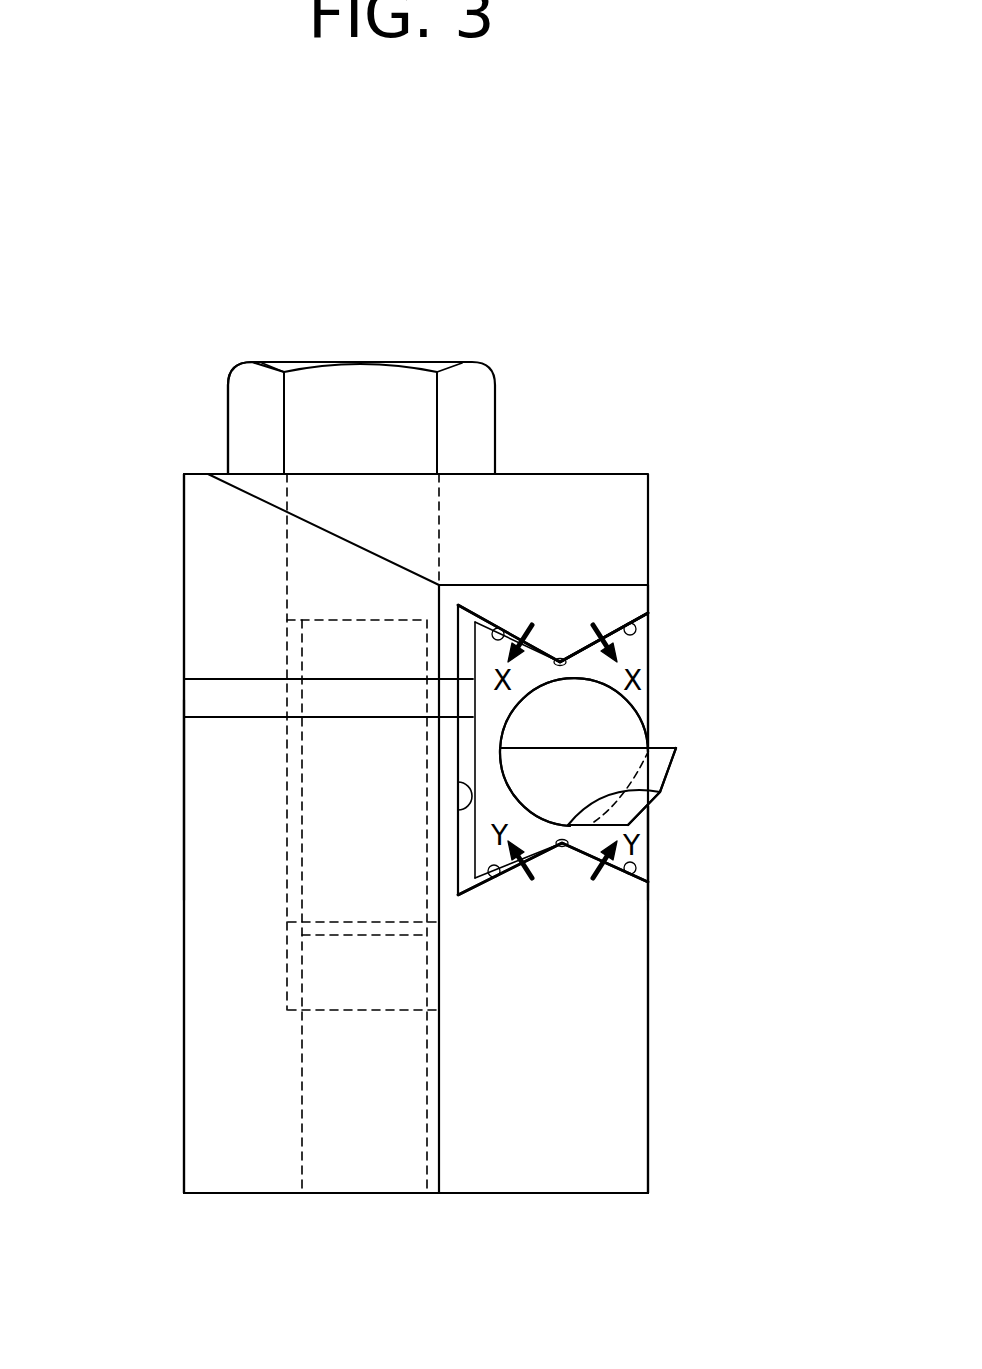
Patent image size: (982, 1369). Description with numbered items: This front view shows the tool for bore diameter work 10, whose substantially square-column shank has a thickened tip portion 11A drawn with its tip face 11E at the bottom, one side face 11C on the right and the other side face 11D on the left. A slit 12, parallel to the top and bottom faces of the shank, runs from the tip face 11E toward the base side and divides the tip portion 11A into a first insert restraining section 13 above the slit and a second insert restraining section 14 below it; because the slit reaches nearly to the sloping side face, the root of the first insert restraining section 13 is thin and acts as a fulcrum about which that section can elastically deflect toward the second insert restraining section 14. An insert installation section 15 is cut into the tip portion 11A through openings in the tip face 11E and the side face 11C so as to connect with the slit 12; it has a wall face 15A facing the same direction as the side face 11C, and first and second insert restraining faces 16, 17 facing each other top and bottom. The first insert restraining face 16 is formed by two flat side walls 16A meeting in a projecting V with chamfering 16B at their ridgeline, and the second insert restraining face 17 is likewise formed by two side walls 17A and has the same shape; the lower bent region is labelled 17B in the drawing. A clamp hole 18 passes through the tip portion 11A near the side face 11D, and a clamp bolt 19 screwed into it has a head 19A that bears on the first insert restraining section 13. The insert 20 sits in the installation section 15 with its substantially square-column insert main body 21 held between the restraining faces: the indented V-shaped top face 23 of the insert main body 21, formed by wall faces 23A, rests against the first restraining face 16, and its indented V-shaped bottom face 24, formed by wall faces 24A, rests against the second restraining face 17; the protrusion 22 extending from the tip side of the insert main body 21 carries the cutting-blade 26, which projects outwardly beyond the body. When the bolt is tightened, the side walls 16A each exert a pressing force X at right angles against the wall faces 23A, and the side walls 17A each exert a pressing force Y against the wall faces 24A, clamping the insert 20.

The tool for bore diameter work 10 is at (673, 210).
The tip portion 11A is at (183, 911).
The one side face 11C is at (653, 1080).
The other side face 11D is at (183, 809).
The tip face 11E is at (622, 1147).
The slit 12 is at (218, 693).
The first insert restraining section 13 is at (215, 556).
The second insert restraining section 14 is at (225, 1035).
The insert installation section 15 is at (660, 725).
The wall face 15A is at (472, 810).
The first insert restraining face 16 is at (553, 635).
The side walls 16A is at (494, 628).
The chamfering 16B is at (560, 664).
The second insert restraining face 17 is at (553, 868).
The side walls 17A is at (633, 882).
The lower edge of opening 17B is at (650, 810).
The clamp hole 18 is at (318, 1160).
The clamp bolt 19 is at (313, 355).
The head 19A is at (250, 417).
The insert 20 is at (660, 703).
The insert main body 21 is at (655, 642).
The protrusion 22 is at (670, 786).
The top face 23 is at (630, 537).
The wall faces 23A is at (520, 642).
The bottom face 24 is at (632, 990).
The wall faces 24A is at (520, 847).
The cutting-blade 26 is at (667, 748).